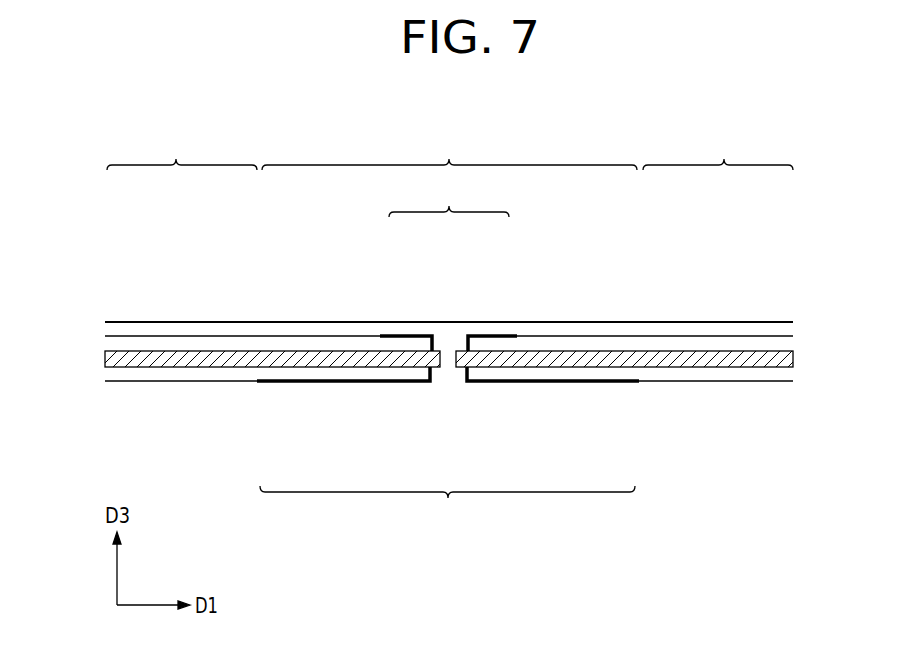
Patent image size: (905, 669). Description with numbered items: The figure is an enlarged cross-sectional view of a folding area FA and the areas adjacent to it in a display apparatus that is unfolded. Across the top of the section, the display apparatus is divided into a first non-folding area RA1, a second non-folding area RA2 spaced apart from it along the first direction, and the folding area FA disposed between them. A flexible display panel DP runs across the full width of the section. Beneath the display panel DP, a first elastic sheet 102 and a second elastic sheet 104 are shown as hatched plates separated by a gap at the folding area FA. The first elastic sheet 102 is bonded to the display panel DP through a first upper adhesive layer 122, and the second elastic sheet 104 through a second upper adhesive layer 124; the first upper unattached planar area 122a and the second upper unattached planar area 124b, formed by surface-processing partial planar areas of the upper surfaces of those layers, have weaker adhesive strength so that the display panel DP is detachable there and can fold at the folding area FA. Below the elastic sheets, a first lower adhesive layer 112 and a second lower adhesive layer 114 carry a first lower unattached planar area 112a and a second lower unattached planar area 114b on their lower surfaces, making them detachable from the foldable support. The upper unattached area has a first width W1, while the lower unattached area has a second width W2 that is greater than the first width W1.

The first elastic sheet 102 is at (107, 358).
The second elastic sheet 104 is at (785, 358).
The first lower adhesive layer 112 is at (201, 376).
The first lower unattached planar area 112a is at (342, 385).
The second lower adhesive layer 114 is at (716, 376).
The second lower unattached planar area 114b is at (552, 385).
The first upper adhesive layer 122 is at (143, 341).
The first upper unattached planar area 122a is at (402, 336).
The second upper adhesive layer 124 is at (660, 341).
The second upper unattached planar area 124b is at (487, 336).
The display panel DP is at (793, 330).
The first non-folding area RA1 is at (182, 152).
The second non-folding area RA2 is at (718, 152).
The folding area FA is at (449, 152).
The first width W1 is at (449, 198).
The second width W2 is at (447, 505).